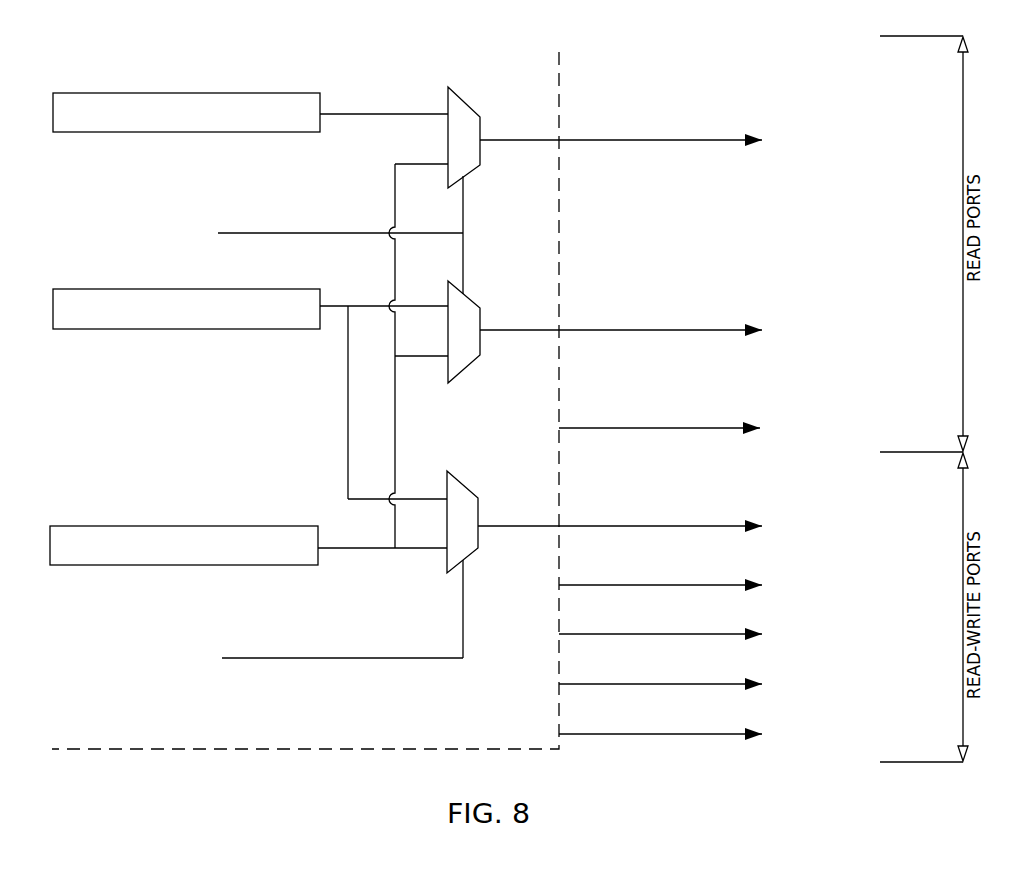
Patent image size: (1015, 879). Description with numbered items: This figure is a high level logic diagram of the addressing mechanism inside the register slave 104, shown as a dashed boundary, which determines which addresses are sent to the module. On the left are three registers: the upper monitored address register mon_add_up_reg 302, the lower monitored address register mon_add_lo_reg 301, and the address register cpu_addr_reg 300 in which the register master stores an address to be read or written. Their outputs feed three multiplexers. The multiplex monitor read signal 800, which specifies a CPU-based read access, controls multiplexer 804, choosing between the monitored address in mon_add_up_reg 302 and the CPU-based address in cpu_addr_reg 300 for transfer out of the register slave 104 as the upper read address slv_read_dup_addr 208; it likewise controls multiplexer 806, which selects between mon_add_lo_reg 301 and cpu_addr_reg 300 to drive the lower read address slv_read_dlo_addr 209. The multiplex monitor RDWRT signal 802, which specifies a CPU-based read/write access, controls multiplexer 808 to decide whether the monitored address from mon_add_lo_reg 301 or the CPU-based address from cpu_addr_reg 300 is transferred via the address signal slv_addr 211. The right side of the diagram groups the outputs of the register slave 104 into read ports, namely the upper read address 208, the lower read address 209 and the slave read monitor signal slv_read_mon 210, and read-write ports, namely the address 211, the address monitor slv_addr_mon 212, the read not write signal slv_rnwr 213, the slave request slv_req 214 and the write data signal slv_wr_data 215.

The mon_add_up_reg 302 is at (158, 92).
The mon_add_lo_reg 301 is at (160, 330).
The address register 300 is at (157, 524).
The multiplex monitor read signal 800 is at (133, 204).
The multiplex monitor RDWRT signal 802 is at (138, 633).
The multiplexer 804 is at (480, 117).
The multiplexer 806 is at (480, 308).
The multiplexer 808 is at (478, 498).
The register slave 104 is at (536, 734).
The upper read address 208 is at (762, 141).
The lower read address 209 is at (762, 331).
The slave read monitor signal 210 is at (760, 427).
The address 211 is at (762, 525).
The address monitor 212 is at (762, 584).
The read not write signal 213 is at (762, 633).
The slave request 214 is at (762, 683).
The write data signal 215 is at (762, 733).